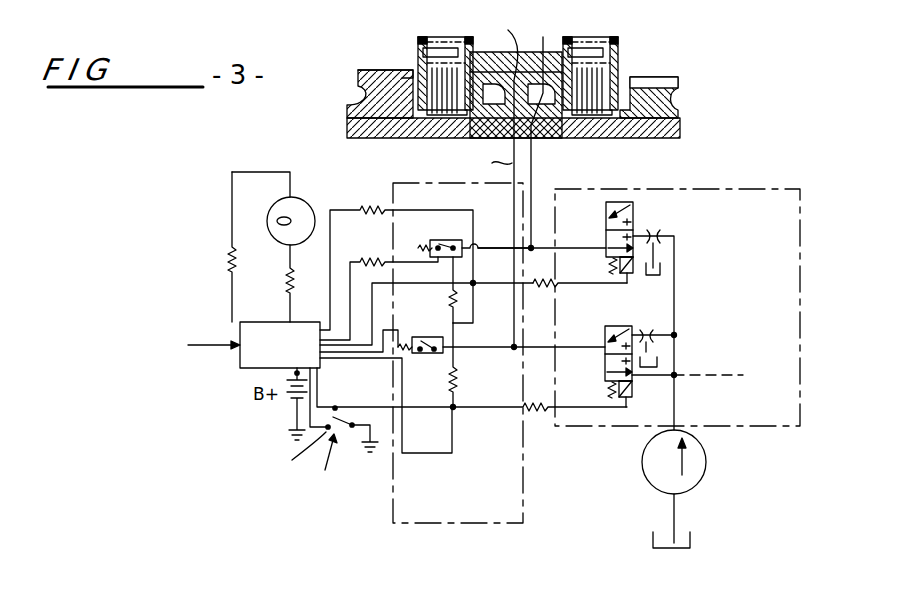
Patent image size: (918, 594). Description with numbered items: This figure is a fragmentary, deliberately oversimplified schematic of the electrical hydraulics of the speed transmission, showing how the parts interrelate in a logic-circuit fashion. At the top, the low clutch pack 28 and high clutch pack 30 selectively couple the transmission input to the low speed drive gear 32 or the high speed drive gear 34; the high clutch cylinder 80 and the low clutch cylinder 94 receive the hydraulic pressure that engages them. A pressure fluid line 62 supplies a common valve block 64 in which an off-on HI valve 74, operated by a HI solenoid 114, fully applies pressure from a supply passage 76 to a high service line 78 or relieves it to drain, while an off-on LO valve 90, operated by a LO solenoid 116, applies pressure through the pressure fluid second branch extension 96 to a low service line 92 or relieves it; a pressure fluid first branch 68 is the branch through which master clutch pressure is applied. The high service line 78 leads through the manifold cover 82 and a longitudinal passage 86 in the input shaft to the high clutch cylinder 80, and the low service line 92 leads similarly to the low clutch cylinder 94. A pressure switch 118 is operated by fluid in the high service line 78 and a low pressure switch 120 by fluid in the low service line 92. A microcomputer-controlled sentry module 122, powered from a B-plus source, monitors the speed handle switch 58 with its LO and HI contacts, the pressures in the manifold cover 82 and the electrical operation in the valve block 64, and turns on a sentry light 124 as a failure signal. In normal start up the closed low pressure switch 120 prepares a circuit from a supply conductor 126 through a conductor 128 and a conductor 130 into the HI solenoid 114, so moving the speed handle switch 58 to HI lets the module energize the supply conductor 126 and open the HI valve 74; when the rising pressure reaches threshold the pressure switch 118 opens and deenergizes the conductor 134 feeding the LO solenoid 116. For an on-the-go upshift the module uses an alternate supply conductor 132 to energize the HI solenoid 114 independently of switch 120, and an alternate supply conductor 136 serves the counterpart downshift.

The low power shift clutch pack 28 is at (603, 90).
The high power shift clutch pack 30 is at (440, 87).
The low speed drive gear 32 is at (670, 95).
The high speed drive gear 34 is at (372, 88).
The speed handle switch 58 is at (352, 421).
The pressure fluid line 62 is at (676, 407).
The common valve block 64 is at (660, 189).
The pressure fluid first branch 68 is at (697, 374).
The off-on HI valve 74 is at (605, 345).
The supply passage 76 is at (676, 346).
The high service line 78 is at (514, 350).
The high clutch cylinder 80 is at (499, 182).
The manifold cover 82 is at (467, 522).
The longitudinal passage 86 is at (487, 164).
The off-on LO valve 90 is at (606, 228).
The low service line 92 is at (531, 250).
The low clutch cylinder 94 is at (541, 132).
The pressure fluid second branch extension 96 is at (676, 272).
The HI solenoid 114 is at (640, 381).
The LO solenoid 116 is at (637, 274).
The pressure switch 118 is at (425, 355).
The low pressure switch 120 is at (449, 238).
The sentry module 122 is at (243, 366).
The sentry light 124 is at (290, 184).
The supply conductor 126 is at (348, 275).
The conductor 128 is at (455, 388).
The conductor 130 is at (575, 397).
The alternate supply conductor 132 is at (412, 410).
The conductor 134 is at (567, 287).
The alternate supply conductor 136 is at (408, 285).